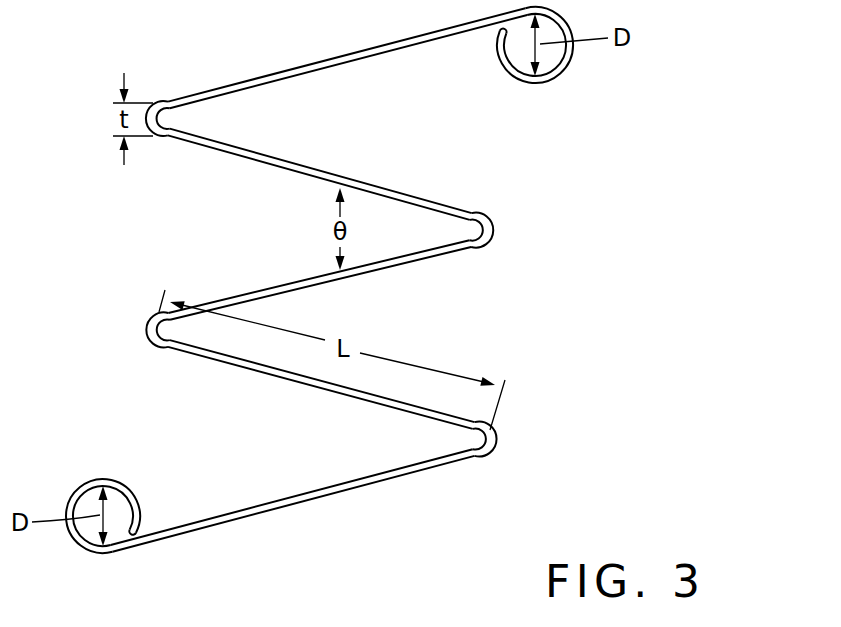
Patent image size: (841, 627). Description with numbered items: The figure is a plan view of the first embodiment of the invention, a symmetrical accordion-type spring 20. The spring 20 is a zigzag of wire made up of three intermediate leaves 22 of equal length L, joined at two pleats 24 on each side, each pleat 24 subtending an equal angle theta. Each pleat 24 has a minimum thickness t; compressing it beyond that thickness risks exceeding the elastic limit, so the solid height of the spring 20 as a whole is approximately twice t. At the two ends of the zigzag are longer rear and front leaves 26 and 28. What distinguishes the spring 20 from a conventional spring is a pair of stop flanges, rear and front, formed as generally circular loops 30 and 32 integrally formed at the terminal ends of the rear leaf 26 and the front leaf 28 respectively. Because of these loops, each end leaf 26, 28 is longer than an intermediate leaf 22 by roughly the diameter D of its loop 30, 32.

The spring 20 is at (326, 291).
The intermediate leaves 22 is at (296, 162).
The pleats 24 is at (157, 119).
The rear leaf 26 is at (273, 510).
The front leaf 28 is at (327, 62).
The rear loop 30 is at (92, 478).
The front loop 32 is at (570, 59).